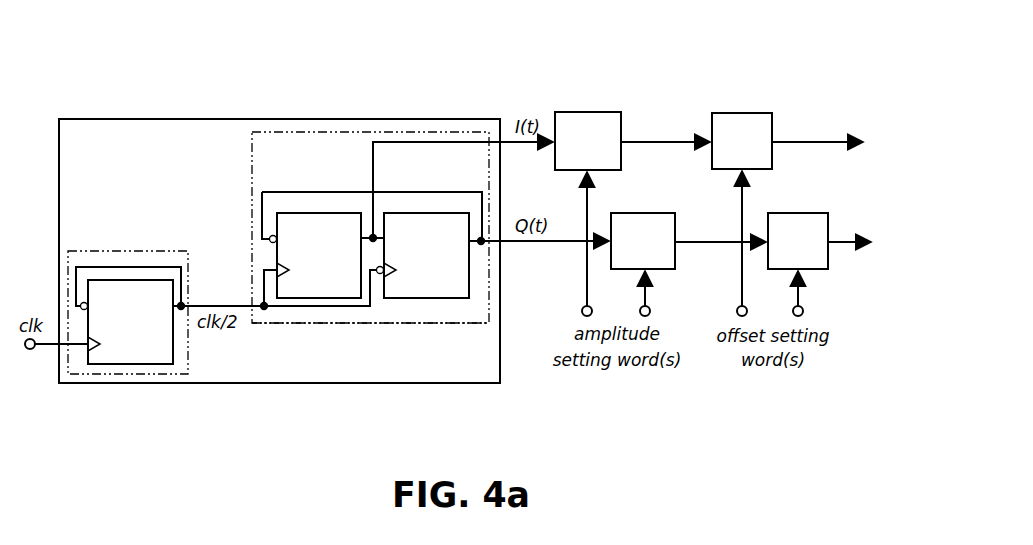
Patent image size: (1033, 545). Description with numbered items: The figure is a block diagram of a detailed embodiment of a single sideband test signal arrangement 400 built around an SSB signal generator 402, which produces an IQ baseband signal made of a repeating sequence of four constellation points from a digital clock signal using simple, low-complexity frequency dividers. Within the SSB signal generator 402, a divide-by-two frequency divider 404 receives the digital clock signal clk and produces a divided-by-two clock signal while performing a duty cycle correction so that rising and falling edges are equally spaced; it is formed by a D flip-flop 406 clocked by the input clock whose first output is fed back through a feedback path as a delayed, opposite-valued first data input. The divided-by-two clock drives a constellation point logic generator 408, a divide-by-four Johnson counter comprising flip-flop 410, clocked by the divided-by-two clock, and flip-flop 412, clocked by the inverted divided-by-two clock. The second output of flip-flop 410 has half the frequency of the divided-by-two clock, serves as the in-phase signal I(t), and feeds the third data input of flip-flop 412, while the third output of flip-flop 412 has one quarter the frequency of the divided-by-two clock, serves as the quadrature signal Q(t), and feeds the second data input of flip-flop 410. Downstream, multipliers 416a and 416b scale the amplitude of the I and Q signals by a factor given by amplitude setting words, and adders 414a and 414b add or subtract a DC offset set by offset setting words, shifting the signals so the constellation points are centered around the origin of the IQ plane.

The quadrature signal generator circuit 400 is at (120, 70).
The SSB signal generator 402 is at (432, 115).
The divide-by-two frequency divider 404 is at (134, 251).
The D flip-flop 406 is at (130, 315).
The constellation point logic generator 408 is at (276, 325).
The flip-flop 410 is at (372, 245).
The flip-flop 412 is at (423, 255).
The adder 414a is at (760, 113).
The adder 414b is at (800, 213).
The multiplier 416a is at (607, 112).
The multiplier 416b is at (650, 213).